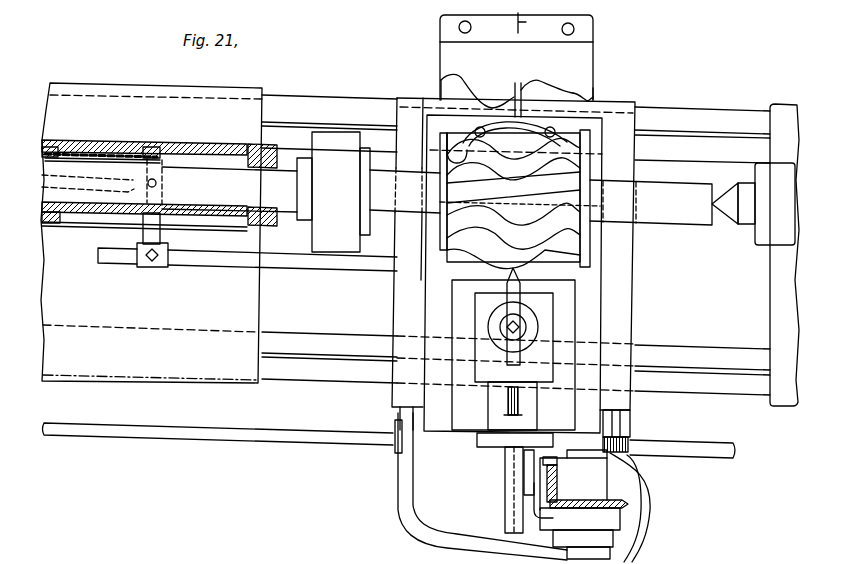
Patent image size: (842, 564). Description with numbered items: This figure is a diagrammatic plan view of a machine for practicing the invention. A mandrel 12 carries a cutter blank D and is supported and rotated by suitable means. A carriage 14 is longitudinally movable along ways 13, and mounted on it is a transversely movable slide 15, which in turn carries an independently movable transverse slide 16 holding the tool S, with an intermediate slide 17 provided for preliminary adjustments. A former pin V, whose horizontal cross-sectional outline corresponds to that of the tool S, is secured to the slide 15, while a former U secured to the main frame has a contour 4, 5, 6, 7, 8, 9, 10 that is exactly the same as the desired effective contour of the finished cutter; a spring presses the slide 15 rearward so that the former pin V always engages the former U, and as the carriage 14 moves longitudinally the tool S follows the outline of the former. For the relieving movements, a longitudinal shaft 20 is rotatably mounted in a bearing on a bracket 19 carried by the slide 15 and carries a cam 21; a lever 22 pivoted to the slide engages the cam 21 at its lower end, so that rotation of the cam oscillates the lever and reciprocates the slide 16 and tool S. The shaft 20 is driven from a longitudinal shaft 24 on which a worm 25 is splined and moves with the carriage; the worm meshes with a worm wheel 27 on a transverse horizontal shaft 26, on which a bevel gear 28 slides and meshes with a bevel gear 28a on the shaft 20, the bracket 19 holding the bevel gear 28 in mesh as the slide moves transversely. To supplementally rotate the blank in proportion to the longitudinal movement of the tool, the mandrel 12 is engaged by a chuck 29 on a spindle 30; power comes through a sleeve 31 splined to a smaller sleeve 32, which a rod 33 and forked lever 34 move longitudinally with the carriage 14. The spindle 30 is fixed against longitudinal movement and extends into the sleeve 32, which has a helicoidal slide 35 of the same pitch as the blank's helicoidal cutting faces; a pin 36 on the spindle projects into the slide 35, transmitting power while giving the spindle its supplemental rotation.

The former contour end 4 is at (594, 93).
The former contour point 5 is at (577, 92).
The former contour point 6 is at (543, 88).
The former contour point 7 is at (517, 88).
The former contour point 8 is at (485, 106).
The former contour point 9 is at (455, 83).
The former contour end 10 is at (441, 80).
The mandrel 12 is at (670, 213).
The ways 13 is at (715, 122).
The carriage 14 is at (630, 273).
The transversely movable slide 15 is at (576, 306).
The independently movable transverse slide 16 is at (578, 295).
The intermediate slide 17 is at (538, 331).
The bracket 19 is at (545, 522).
The longitudinal shaft 20 is at (507, 481).
The cam 21 is at (505, 510).
The lever 22 is at (480, 526).
The longitudinal shaft 24 is at (310, 441).
The worm 25 is at (613, 426).
The transverse horizontal shaft 26 is at (607, 492).
The worm wheel 27 is at (628, 434).
The bevel gear 28 is at (620, 504).
The bevel gear 28a is at (558, 482).
The chuck 29 is at (323, 138).
The spindle 30 is at (182, 167).
The sleeve 31 is at (48, 143).
The smaller sleeve 32 is at (100, 152).
The rod 33 is at (218, 262).
The forked lever 34 is at (160, 238).
The helicoidal slide 35 is at (95, 185).
The pin 36 is at (60, 178).
The cutter blank D is at (590, 138).
The tool S is at (518, 290).
The former U is at (587, 65).
The former pin V is at (525, 108).